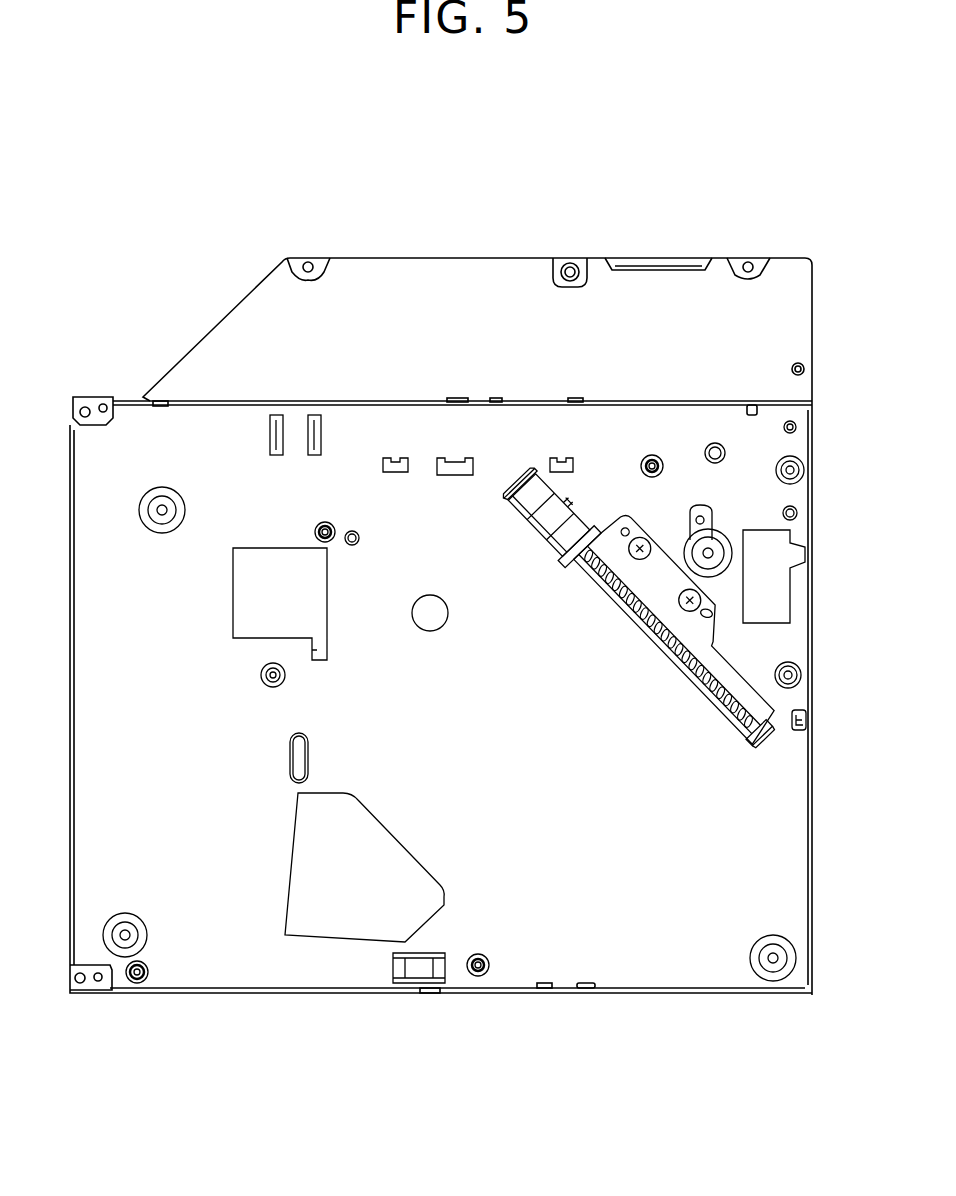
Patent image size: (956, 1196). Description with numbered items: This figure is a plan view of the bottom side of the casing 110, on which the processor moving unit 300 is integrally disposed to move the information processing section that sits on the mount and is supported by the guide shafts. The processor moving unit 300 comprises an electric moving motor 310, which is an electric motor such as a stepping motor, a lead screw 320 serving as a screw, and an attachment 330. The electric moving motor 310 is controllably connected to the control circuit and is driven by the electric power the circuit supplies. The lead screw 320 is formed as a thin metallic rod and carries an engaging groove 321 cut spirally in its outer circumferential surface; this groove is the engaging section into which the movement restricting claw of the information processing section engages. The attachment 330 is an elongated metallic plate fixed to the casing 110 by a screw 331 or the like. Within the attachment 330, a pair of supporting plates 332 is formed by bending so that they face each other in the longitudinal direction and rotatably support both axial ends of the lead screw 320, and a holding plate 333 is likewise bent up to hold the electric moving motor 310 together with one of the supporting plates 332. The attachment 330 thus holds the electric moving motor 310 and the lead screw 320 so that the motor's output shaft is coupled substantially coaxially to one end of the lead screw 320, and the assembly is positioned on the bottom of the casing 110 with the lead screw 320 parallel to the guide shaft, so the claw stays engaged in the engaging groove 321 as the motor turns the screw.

The casing 110 is at (790, 257).
The processor moving unit 300 is at (553, 675).
The electric moving motor 310 is at (558, 540).
The lead screw 320 is at (676, 656).
The engaging groove 321 is at (649, 636).
The attachment 330 is at (710, 701).
The screw 331 is at (679, 595).
The supporting plates 332 is at (566, 566).
The holding plate 333 is at (507, 504).